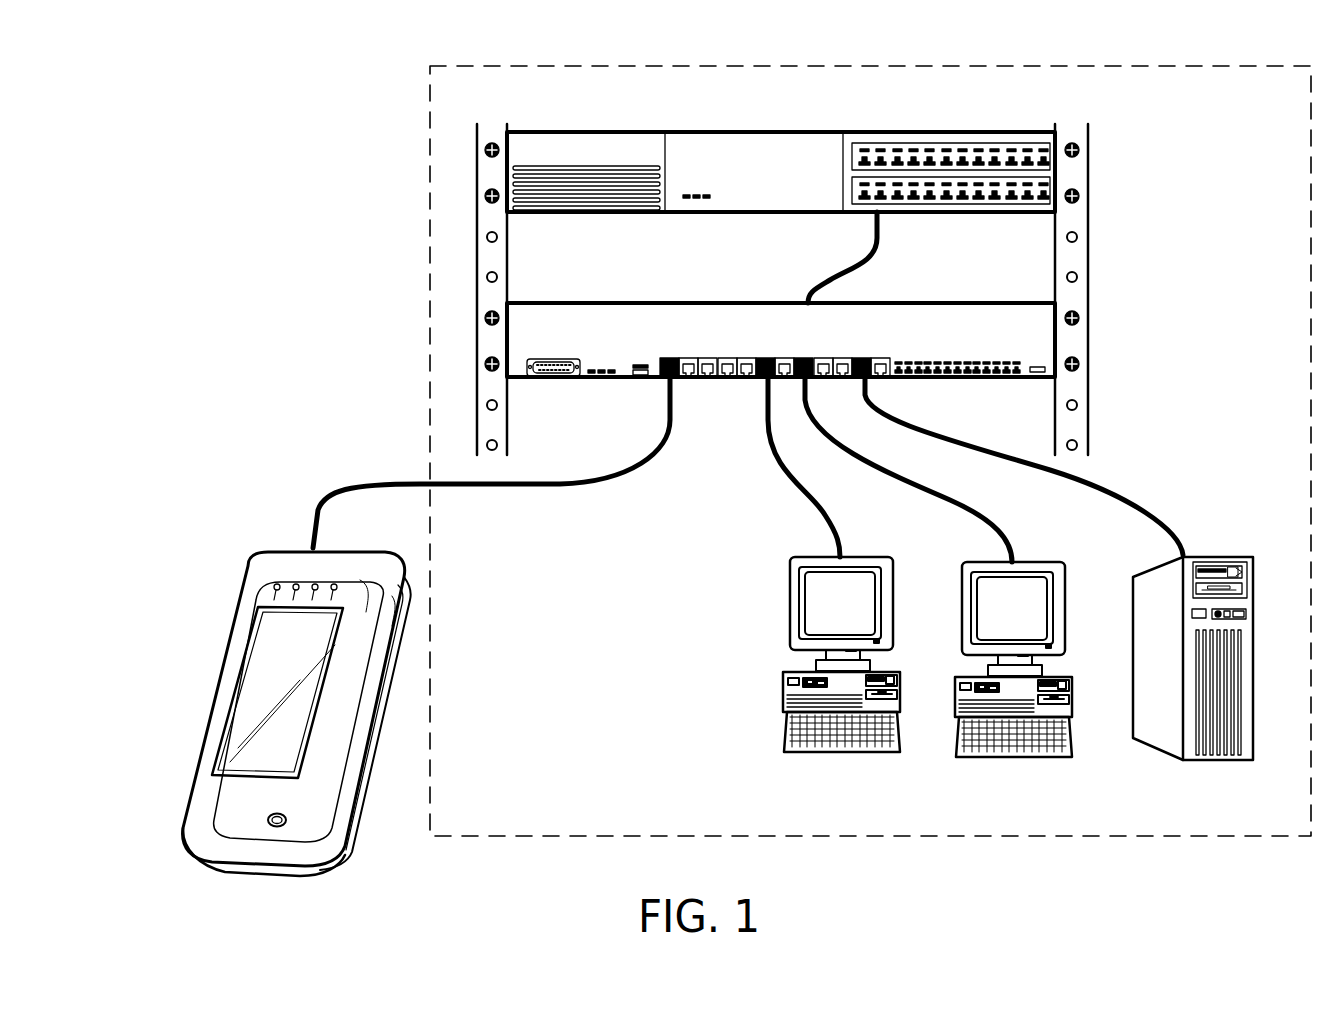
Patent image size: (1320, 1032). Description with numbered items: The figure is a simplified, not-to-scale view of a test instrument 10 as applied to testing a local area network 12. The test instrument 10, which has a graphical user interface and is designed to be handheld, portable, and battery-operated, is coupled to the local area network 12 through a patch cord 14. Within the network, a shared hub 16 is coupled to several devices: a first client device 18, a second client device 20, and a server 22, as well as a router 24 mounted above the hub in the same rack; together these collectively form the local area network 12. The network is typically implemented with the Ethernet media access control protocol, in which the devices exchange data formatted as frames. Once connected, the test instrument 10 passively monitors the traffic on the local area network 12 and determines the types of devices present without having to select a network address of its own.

The test instrument 10 is at (270, 548).
The local area network 12 is at (639, 735).
The patch cord 14 is at (483, 487).
The shared hub 16 is at (918, 303).
The client device 18 is at (862, 557).
The client device 20 is at (1032, 562).
The server 22 is at (1190, 556).
The router 24 is at (942, 133).